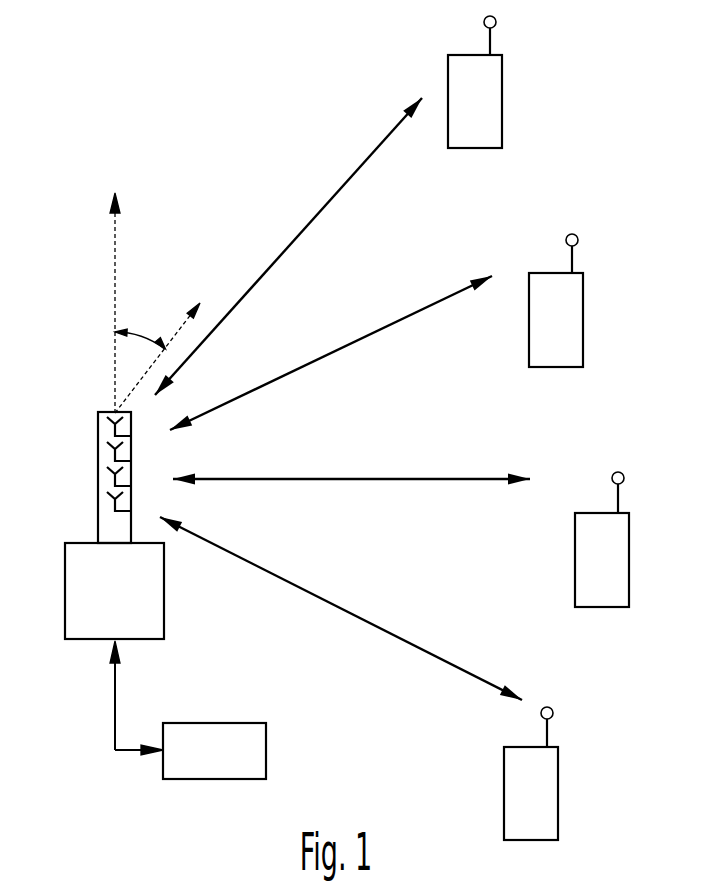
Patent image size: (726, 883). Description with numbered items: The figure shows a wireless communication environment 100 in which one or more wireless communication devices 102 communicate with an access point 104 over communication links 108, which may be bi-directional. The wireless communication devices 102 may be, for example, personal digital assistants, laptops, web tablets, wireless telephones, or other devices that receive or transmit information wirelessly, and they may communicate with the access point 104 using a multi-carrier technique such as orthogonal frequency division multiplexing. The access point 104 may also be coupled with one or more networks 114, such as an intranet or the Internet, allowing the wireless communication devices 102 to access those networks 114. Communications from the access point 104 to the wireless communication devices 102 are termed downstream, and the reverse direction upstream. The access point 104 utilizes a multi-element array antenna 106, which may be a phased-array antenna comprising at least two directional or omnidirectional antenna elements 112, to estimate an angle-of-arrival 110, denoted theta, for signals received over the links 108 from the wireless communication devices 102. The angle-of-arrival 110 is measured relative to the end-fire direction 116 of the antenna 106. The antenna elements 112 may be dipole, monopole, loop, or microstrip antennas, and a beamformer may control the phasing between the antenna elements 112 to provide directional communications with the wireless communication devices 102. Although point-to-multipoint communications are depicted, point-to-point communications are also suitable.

The communication environment 100 is at (100, 87).
The wireless communication device 102 is at (504, 101).
The access point 104 is at (65, 592).
The multi-element array antenna 106 is at (116, 411).
The communication link 108 is at (312, 223).
The angle-of-arrival 110 is at (150, 300).
The antenna element 112 is at (108, 429).
The network 114 is at (215, 723).
The end-fire direction 116 is at (114, 278).